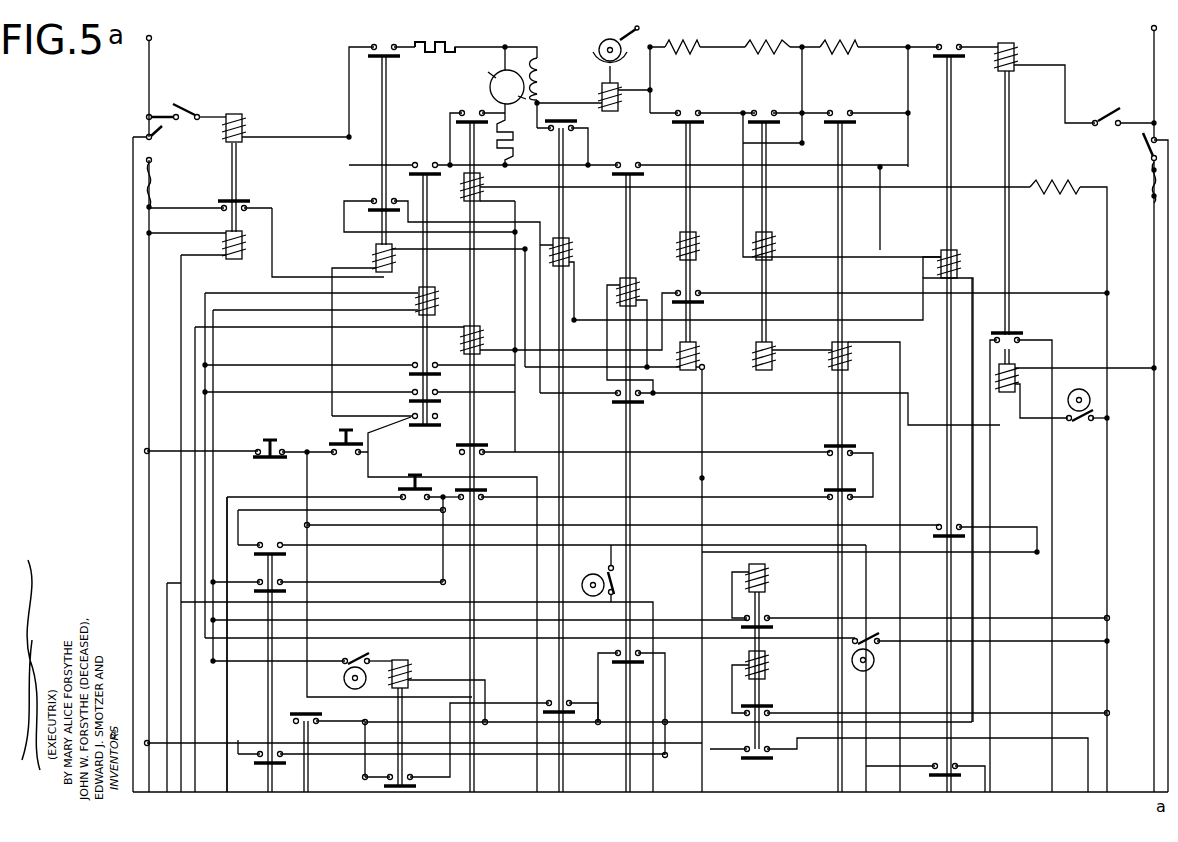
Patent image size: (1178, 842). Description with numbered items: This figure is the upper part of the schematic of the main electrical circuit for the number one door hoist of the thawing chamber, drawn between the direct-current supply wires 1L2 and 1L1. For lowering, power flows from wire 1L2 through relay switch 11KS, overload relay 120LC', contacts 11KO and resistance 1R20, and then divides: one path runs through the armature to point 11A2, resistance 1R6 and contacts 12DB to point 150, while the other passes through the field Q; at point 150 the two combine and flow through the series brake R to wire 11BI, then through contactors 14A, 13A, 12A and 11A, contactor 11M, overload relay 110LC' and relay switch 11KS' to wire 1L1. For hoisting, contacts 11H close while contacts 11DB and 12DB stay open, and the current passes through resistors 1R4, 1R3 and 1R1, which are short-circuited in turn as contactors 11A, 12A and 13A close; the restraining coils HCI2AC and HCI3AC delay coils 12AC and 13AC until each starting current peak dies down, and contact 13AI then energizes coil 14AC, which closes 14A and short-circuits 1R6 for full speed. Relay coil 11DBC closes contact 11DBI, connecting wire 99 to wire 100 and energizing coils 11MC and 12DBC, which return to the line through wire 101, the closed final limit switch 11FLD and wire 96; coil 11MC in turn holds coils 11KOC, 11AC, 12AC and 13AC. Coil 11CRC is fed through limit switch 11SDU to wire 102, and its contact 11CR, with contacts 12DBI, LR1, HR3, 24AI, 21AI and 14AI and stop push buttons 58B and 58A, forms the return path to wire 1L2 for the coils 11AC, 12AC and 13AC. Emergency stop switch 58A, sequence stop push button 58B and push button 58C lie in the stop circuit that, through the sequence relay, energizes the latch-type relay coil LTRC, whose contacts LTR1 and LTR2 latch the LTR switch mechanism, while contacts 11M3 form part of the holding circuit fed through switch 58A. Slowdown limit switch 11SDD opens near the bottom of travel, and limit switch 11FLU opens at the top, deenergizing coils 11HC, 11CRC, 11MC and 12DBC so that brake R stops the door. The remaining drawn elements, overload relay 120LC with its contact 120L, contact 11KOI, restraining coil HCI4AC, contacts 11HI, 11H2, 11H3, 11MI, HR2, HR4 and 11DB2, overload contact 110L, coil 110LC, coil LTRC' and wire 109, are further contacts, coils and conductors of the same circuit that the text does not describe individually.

The supply wire 1L2 is at (151, 72).
The supply wire 1L1 is at (1150, 62).
The relay switch 11KS is at (189, 97).
The relay switch 11KS' is at (1117, 105).
The overload relay 120LC' is at (285, 118).
The overload relay coil 120LC is at (197, 511).
The overload relay contact 120L is at (246, 203).
The relay contacts 11KO is at (388, 34).
The relay contact 11KOI is at (373, 200).
The relay coil 11KOC is at (372, 268).
The resistance 1R20 is at (433, 42).
The armature point 11A2 is at (488, 82).
The contactor 14A is at (472, 110).
The resistance 1R6 is at (515, 140).
The field Q is at (542, 80).
The point 150 is at (600, 95).
The wire 11BI is at (634, 34).
The series brake R is at (618, 103).
The contacts 12DB is at (567, 118).
The resistor 1R4 is at (687, 40).
The resistor 1R3 is at (767, 38).
The resistor 1R1 is at (860, 46).
The contactor 11M is at (949, 43).
The overload relay coil 110LC' is at (1044, 181).
The contactor 13A is at (688, 110).
The contactor 12A is at (764, 110).
The contactor 11A is at (840, 110).
The contacts 11H is at (426, 162).
The contacts 11DB is at (628, 148).
The wire 96 is at (1109, 298).
The relay coil HCI4AC is at (484, 192).
The relay coil 11HC is at (440, 294).
The relay coil 14AC is at (486, 338).
The relay contact 11HI is at (412, 362).
The relay contact 11H2 is at (412, 392).
The relay contact 11H3 is at (412, 415).
The contacts 14AI is at (458, 448).
The relay coil 12DBC is at (572, 252).
The relay coil 11DBC is at (638, 296).
The restraining coil HCI3AC is at (700, 248).
The restraining coil HCI2AC is at (776, 250).
The contact 13AI is at (700, 296).
The relay coil 13AC is at (724, 340).
The relay coil 12AC is at (786, 350).
The relay coil 11AC is at (860, 362).
The relay coil 11MC is at (966, 268).
The wire 101 is at (768, 394).
The contact 11DBI is at (618, 410).
The overload relay contact 110L is at (1036, 330).
The overload relay coil 110LC is at (1074, 383).
The final limit switch 11FLD is at (1080, 421).
The wire 99 is at (700, 480).
The contacts 21AI is at (834, 492).
The emergency stop switch 58A is at (264, 446).
The sequence stop push button 58B is at (340, 438).
The push button 58C is at (404, 492).
The contacts 24AI is at (474, 476).
The conductor 109 is at (288, 494).
The relay contact 11MI is at (942, 528).
The relay contact HR2 is at (270, 527).
The contacts HR3 is at (256, 586).
The relay contact HR4 is at (260, 754).
The wire 102 is at (262, 658).
The slowdown limit switch 11SDU is at (358, 658).
The relay coil 11CRC is at (434, 670).
The contact LR1 is at (322, 722).
The wire 100 is at (360, 738).
The contact 11CR is at (424, 770).
The contact 12DBI is at (546, 712).
The slowdown limit switch 11SDD is at (608, 596).
The relay contact 11DB2 is at (640, 660).
The relay coil LTRC' is at (776, 656).
The contact LTR1 is at (770, 626).
The latch-type relay coil LTRC is at (775, 682).
The latch switch mechanism LTR is at (770, 708).
The contact LTR2 is at (774, 760).
The upper final limit switch 11FLU is at (866, 638).
The contacts 11M3 is at (952, 772).